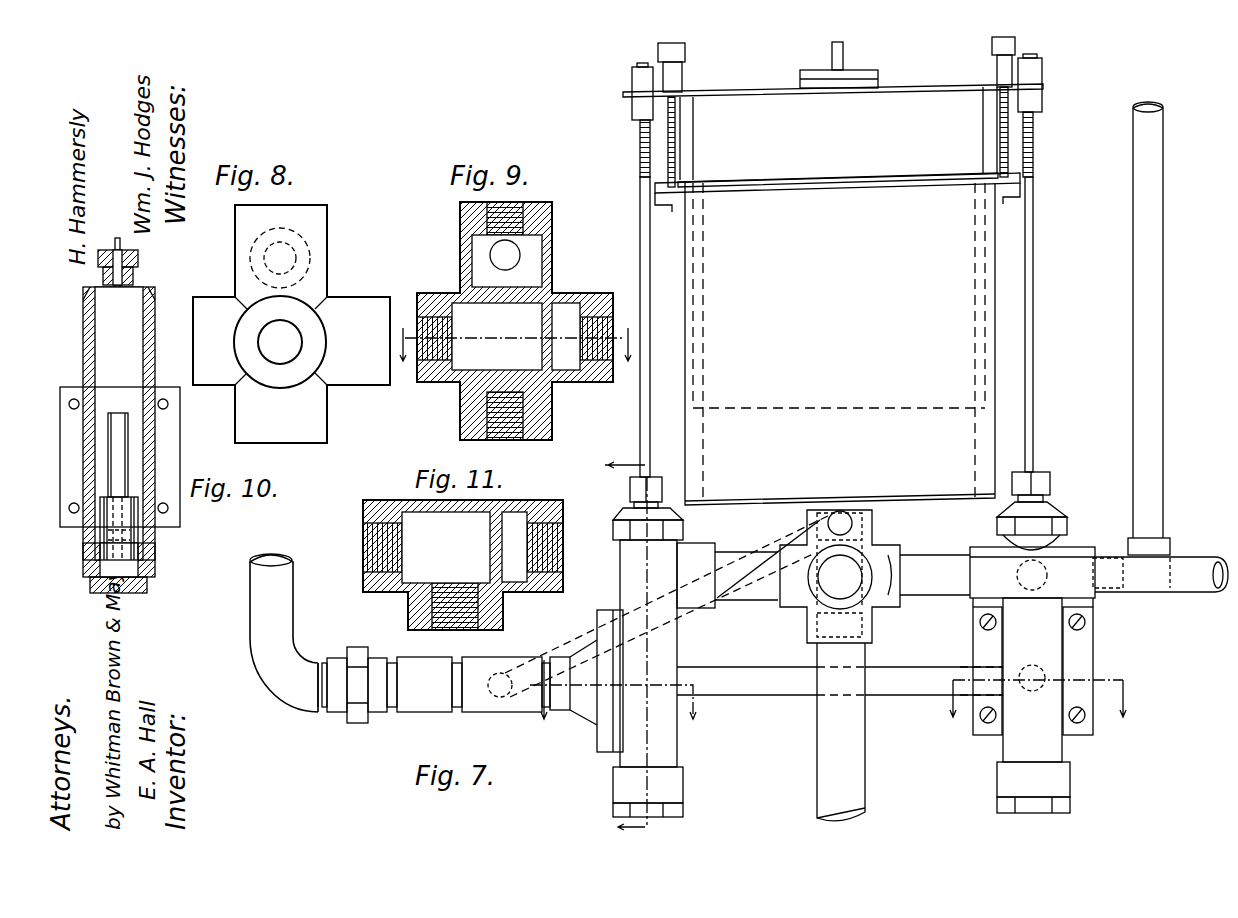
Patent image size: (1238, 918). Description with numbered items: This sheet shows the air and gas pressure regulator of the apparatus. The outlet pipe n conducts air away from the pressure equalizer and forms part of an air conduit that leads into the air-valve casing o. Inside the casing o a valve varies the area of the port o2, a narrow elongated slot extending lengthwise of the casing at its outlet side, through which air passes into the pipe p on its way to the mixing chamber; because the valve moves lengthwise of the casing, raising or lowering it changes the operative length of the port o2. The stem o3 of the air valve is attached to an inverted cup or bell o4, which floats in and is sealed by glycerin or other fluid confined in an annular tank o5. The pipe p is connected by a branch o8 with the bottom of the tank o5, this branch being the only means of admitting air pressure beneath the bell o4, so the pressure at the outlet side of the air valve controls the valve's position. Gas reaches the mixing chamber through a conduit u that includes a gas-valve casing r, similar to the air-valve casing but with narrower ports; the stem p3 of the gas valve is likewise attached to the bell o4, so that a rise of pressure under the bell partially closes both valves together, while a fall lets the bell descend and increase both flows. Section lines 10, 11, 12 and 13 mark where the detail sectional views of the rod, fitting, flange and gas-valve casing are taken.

In FIG. 10, the casing o is at (145, 356).
In FIG. 7, the casing o is at (668, 652).
In FIG. 10, the port o2 is at (108, 445).
In FIG. 10, the stem o3 is at (113, 243).
In FIG. 7, the stem o3 is at (645, 378).
In FIG. 7, the inverted cup or bell o4 is at (695, 148).
In FIG. 7, the annular tank o5 is at (995, 438).
In FIG. 9, the branch o8 is at (492, 256).
In FIG. 7, the branch o8 is at (577, 640).
In FIG. 7, the pipe p is at (470, 703).
In FIG. 7, the rod p3 is at (1033, 300).
In FIG. 7, the conduit u is at (903, 672).
In FIG. 7, the pipe n is at (1180, 595).
In FIG. 7, the gas-valve casing r is at (1050, 645).
In FIG. 7, the section line 10- 10 is at (613, 648).
In FIG. 9, the section line 11- 11 is at (517, 329).
In FIG. 7, the section line 12- 12 is at (618, 703).
In FIG. 7, the section line 13- 13 is at (1037, 711).